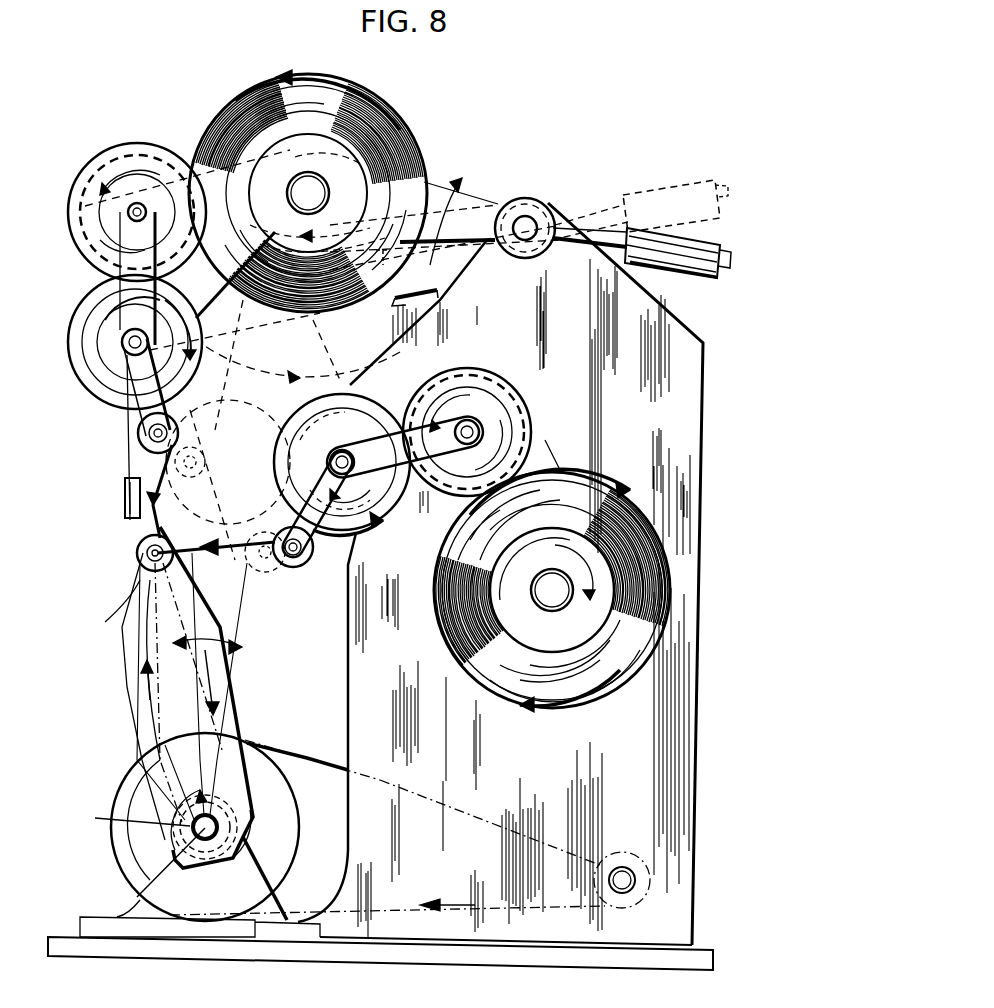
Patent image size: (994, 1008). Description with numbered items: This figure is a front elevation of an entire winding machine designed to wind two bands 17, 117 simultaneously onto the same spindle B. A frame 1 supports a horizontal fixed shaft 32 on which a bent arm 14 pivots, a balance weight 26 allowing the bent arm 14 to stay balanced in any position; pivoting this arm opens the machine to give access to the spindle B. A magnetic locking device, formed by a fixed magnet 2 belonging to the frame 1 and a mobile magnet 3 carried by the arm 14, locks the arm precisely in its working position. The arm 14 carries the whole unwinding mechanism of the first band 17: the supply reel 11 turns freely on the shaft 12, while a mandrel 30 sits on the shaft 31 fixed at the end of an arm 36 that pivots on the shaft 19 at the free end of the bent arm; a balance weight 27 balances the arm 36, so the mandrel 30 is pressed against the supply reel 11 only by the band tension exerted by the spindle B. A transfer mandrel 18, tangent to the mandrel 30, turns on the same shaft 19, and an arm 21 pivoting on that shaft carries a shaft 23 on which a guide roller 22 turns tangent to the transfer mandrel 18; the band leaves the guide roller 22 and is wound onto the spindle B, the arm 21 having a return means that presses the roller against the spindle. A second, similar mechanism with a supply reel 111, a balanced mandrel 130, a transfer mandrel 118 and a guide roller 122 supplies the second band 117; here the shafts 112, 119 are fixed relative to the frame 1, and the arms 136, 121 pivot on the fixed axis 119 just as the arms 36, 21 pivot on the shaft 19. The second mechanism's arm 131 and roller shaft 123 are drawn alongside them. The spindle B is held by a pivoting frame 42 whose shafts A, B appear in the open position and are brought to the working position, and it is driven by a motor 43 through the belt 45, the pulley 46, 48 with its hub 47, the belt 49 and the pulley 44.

The frame 1 is at (688, 336).
The fixed magnet 2 is at (395, 302).
The mobile magnet 3 is at (718, 194).
The supply reel 11 is at (368, 92).
The shaft 12 is at (305, 188).
The bent arm 14 is at (464, 200).
The first band 17 is at (324, 76).
The transfer mandrel 18 is at (120, 406).
The shaft 19 is at (110, 378).
The arm 21 is at (150, 400).
The guide roller 22 is at (150, 440).
The shaft 23 is at (170, 462).
The balance weight 26 is at (676, 272).
The balance weight 27 is at (125, 497).
The mandrel 30 is at (130, 187).
The shaft 31 is at (148, 206).
The fixed shaft 32 is at (528, 214).
The arm 36 is at (125, 252).
The pivoting frame 42 is at (140, 666).
The motor 43 is at (622, 864).
The pulley 44 is at (150, 562).
The belt 45 is at (290, 756).
The pulley 46 is at (290, 832).
The shaft 47 is at (150, 850).
The pulley 48 is at (175, 800).
The belt 49 is at (135, 716).
The supply reel 111 is at (542, 703).
The shaft 112 is at (560, 608).
The second band 117 is at (560, 472).
The transfer mandrel 118 is at (355, 520).
The fixed axis 119 is at (338, 402).
The arm 121 is at (300, 562).
The guide roller 122 is at (300, 526).
The roller 123 is at (292, 568).
The balanced mandrel 130 is at (480, 392).
The arm 131 is at (476, 438).
The arm 136 is at (440, 425).
The shaft A is at (134, 819).
The spindle B is at (112, 607).